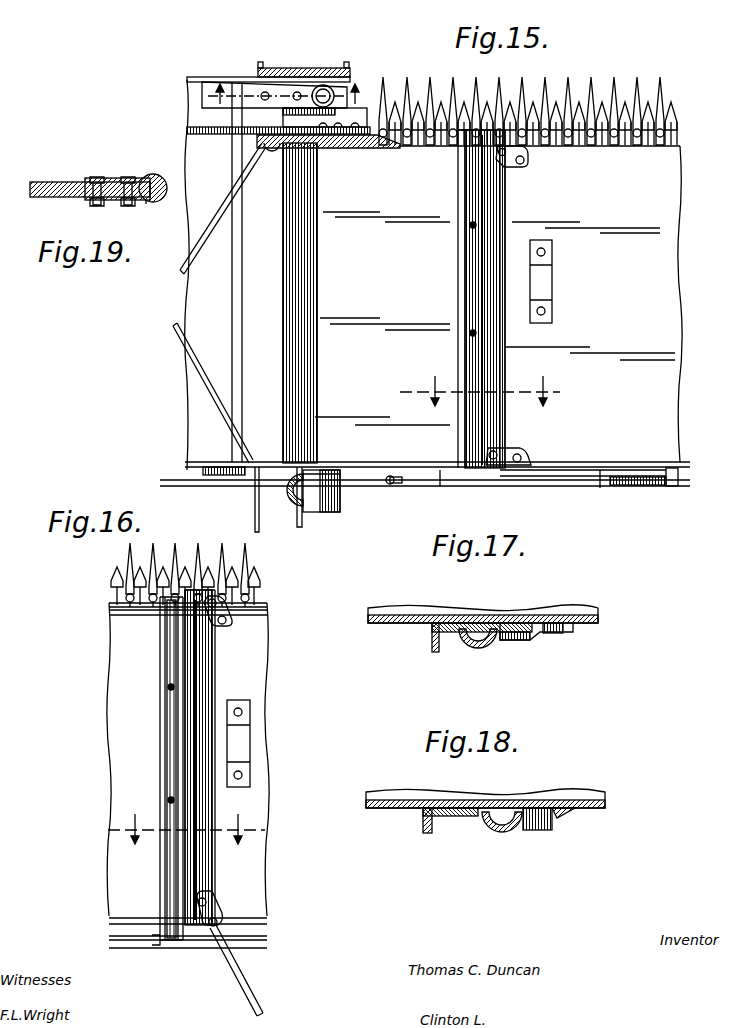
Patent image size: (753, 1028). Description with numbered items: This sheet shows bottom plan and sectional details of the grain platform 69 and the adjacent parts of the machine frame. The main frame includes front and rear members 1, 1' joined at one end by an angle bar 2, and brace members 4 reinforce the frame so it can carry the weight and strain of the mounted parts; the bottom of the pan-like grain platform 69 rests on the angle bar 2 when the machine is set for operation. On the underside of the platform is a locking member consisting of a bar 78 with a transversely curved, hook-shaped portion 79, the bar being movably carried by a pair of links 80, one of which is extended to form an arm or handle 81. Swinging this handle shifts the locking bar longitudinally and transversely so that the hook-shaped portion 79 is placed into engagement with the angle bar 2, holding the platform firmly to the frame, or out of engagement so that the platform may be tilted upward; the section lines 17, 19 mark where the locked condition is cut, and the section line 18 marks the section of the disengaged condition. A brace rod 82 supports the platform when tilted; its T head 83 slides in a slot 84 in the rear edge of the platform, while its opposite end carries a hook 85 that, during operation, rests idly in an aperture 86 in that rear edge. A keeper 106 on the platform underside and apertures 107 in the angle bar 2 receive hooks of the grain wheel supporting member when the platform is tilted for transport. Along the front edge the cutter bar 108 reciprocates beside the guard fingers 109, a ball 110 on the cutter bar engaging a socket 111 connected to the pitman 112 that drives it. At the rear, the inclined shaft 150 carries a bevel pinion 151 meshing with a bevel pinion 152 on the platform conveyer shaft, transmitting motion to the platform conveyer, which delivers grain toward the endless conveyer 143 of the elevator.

In FIG. 15, the front member 1 is at (292, 273).
In FIG. 15, the rear member 1' is at (354, 500).
In FIG. 15, the angle bar 2 is at (460, 293).
In FIG. 16, the angle bar 2 is at (165, 738).
In FIG. 17, the angle bar 2 is at (450, 652).
In FIG. 18, the angle bar 2 is at (448, 830).
In FIG. 15, the brace members 4 is at (196, 248).
In FIG. 15, the section line 17- 17 is at (487, 391).
In FIG. 16, the section line 18- 18 is at (187, 829).
In FIG. 15, the section line 19- 19 is at (297, 94).
In FIG. 15, the grain platform 69 is at (690, 400).
In FIG. 16, the grain platform 69 is at (253, 649).
In FIG. 17, the grain platform 69 is at (580, 624).
In FIG. 18, the grain platform 69 is at (582, 810).
In FIG. 15, the locking bar 78 is at (507, 207).
In FIG. 16, the locking bar 78 is at (205, 672).
In FIG. 17, the locking bar 78 is at (506, 620).
In FIG. 18, the locking bar 78 is at (536, 810).
In FIG. 15, the hook-shaped portion 79 is at (472, 252).
In FIG. 16, the hook-shaped portion 79 is at (190, 690).
In FIG. 17, the hook-shaped portion 79 is at (480, 648).
In FIG. 18, the hook-shaped portion 79 is at (503, 835).
In FIG. 15, the links 80 is at (523, 172).
In FIG. 16, the links 80 is at (238, 625).
In FIG. 17, the links 80 is at (532, 645).
In FIG. 18, the links 80 is at (552, 830).
In FIG. 15, the arm or handle 81 is at (585, 478).
In FIG. 16, the arm or handle 81 is at (242, 986).
In FIG. 15, the brace rod 82 is at (636, 486).
In FIG. 15, the T head 83 is at (672, 487).
In FIG. 15, the slot 84 is at (620, 487).
In FIG. 15, the hook 85 is at (452, 478).
In FIG. 15, the aperture 86 is at (396, 484).
In FIG. 15, the keeper 106 is at (555, 280).
In FIG. 16, the keeper 106 is at (250, 740).
In FIG. 15, the apertures 107 is at (470, 333).
In FIG. 16, the apertures 107 is at (168, 800).
In FIG. 15, the cutter bar 108 is at (581, 94).
In FIG. 16, the cutter bar 108 is at (118, 580).
In FIG. 15, the guard fingers 109 is at (414, 82).
In FIG. 16, the guard fingers 109 is at (220, 548).
In FIG. 19, the ball 110 is at (152, 176).
In FIG. 15, the socket 111 is at (323, 85).
In FIG. 19, the socket 111 is at (148, 202).
In FIG. 15, the pitman 112 is at (232, 87).
In FIG. 19, the pitman 112 is at (54, 198).
In FIG. 15, the endless conveyer 143 is at (195, 298).
In FIG. 15, the inclined shaft 150 is at (205, 480).
In FIG. 15, the bevel pinion 151 is at (285, 518).
In FIG. 15, the bevel pinion 152 is at (325, 512).